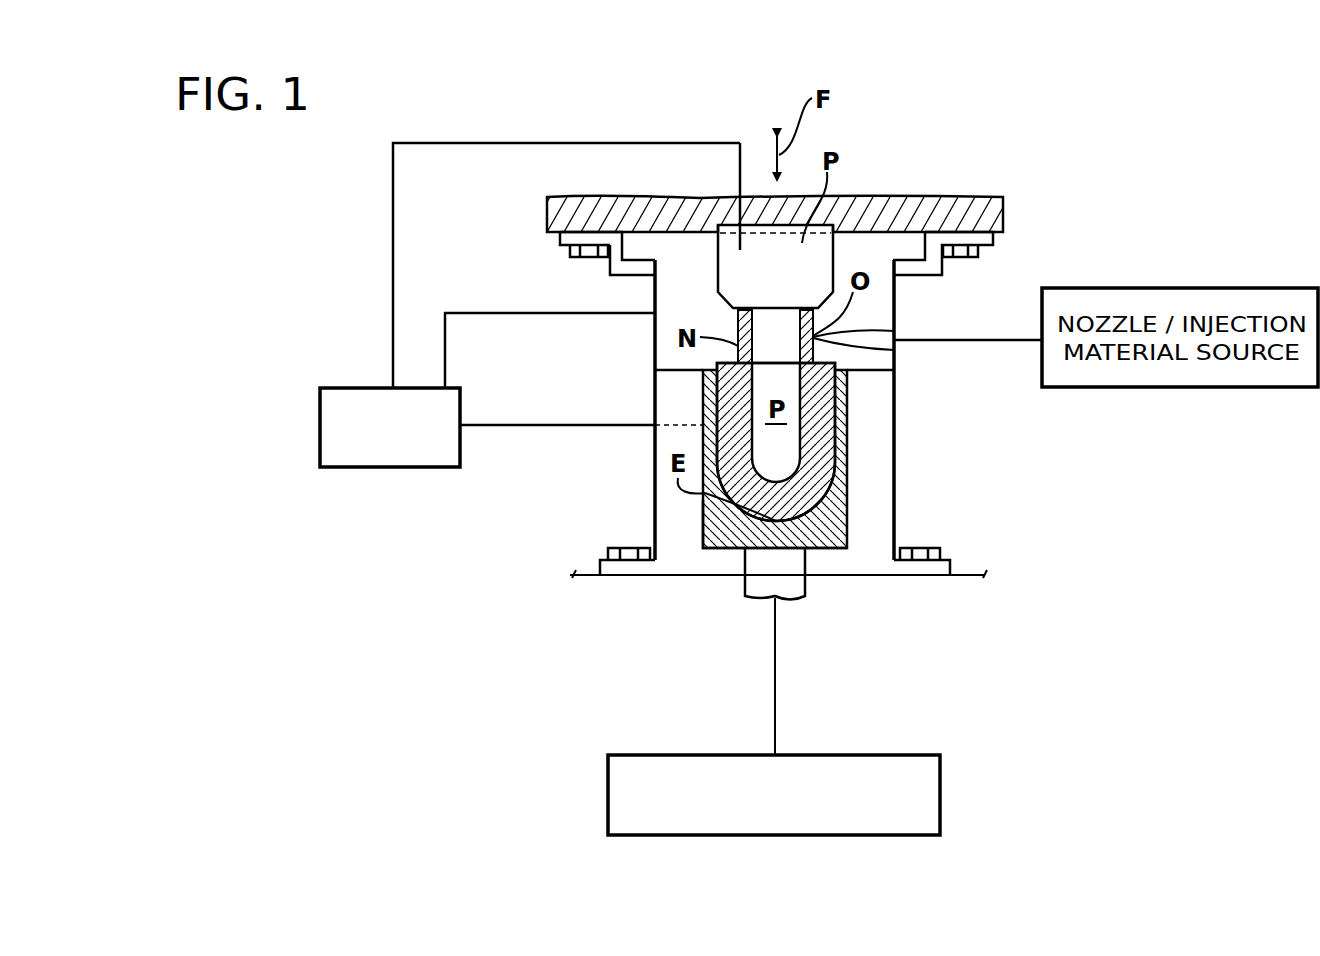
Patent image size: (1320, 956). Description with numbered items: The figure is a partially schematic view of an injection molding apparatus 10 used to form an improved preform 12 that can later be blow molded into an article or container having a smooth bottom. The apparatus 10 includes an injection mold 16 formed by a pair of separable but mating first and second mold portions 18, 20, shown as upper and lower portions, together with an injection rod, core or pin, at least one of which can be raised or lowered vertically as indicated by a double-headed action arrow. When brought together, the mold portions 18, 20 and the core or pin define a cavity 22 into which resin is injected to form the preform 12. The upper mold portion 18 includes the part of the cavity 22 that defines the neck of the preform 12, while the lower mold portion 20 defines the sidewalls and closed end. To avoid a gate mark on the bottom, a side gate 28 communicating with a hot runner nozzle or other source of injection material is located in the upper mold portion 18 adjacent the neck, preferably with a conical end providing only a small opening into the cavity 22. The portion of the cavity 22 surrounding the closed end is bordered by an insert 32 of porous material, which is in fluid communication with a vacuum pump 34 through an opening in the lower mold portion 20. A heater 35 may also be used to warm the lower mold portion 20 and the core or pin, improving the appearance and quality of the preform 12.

The injection molding apparatus 10 is at (880, 124).
The preform 12 is at (817, 472).
The injection mold 16 is at (552, 524).
The first mold portion 18 is at (875, 243).
The second mold portion 20 is at (862, 560).
The cavity 22 is at (840, 441).
The gate 28 is at (862, 334).
The insert 32 is at (705, 518).
The vacuum pump 34 is at (942, 789).
The heater 35 is at (322, 413).